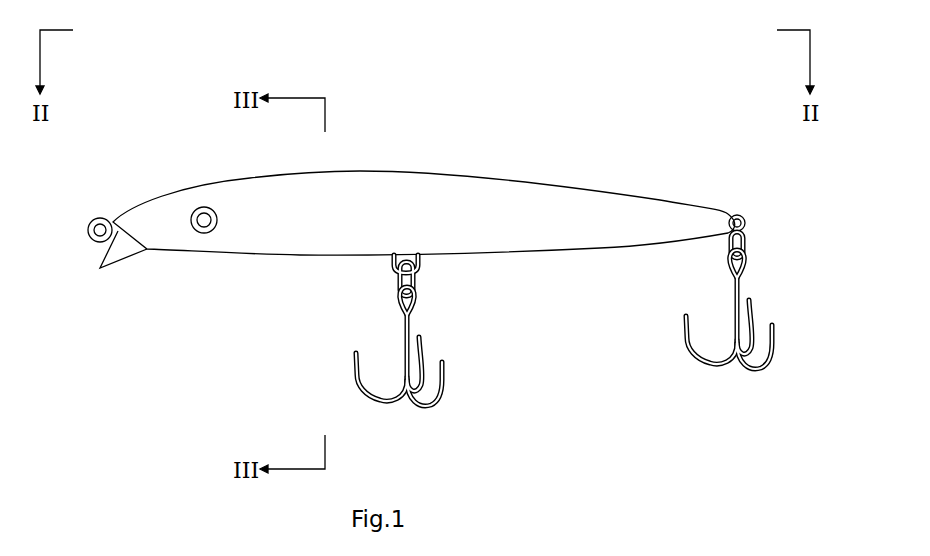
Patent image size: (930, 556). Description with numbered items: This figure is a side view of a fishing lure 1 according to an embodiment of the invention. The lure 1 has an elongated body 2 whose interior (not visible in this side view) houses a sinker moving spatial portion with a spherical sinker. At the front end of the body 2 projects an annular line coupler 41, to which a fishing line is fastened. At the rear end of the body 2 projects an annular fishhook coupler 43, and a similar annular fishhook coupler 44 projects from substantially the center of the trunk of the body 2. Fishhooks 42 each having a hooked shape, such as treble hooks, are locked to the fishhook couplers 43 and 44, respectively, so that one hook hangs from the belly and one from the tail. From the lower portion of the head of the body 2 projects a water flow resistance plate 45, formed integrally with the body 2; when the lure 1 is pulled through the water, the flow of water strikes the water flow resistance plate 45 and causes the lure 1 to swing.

The lure 1 is at (570, 427).
The body 2 is at (613, 192).
The annular line coupler 41 is at (90, 227).
The fishhook 42 is at (353, 378).
The annular fishhook coupler 43 is at (742, 215).
The annular fishhook coupler 44 is at (415, 265).
The water flow resistance plate 45 is at (130, 257).